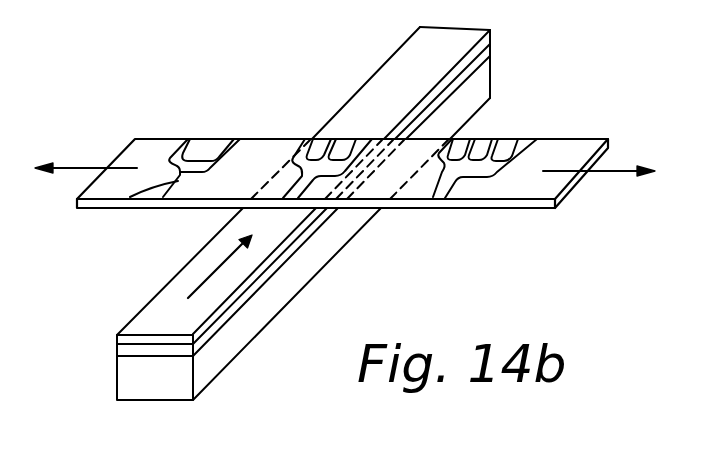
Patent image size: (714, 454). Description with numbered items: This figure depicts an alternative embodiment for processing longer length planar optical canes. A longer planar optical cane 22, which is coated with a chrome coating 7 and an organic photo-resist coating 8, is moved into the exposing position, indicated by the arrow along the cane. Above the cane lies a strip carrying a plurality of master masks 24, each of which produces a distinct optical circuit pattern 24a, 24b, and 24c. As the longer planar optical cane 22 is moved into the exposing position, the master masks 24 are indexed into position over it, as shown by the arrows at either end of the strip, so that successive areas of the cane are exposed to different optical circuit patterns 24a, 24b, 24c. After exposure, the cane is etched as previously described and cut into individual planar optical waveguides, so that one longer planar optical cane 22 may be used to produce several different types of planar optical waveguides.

The master masks 24 is at (570, 152).
The optical circuit pattern 24a is at (138, 193).
The optical circuit pattern 24b is at (337, 147).
The optical circuit pattern 24c is at (443, 197).
The organic photo-resist coating 8 is at (115, 337).
The chrome coating 7 is at (122, 350).
The longer planar optical cane 22 is at (128, 383).